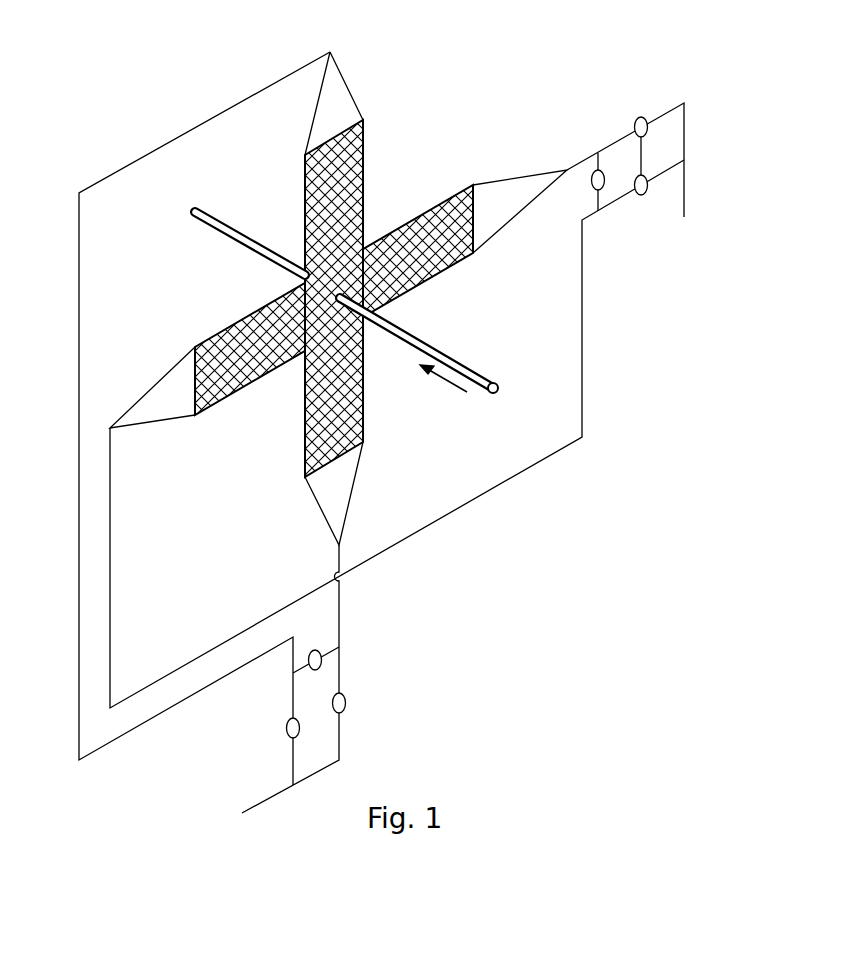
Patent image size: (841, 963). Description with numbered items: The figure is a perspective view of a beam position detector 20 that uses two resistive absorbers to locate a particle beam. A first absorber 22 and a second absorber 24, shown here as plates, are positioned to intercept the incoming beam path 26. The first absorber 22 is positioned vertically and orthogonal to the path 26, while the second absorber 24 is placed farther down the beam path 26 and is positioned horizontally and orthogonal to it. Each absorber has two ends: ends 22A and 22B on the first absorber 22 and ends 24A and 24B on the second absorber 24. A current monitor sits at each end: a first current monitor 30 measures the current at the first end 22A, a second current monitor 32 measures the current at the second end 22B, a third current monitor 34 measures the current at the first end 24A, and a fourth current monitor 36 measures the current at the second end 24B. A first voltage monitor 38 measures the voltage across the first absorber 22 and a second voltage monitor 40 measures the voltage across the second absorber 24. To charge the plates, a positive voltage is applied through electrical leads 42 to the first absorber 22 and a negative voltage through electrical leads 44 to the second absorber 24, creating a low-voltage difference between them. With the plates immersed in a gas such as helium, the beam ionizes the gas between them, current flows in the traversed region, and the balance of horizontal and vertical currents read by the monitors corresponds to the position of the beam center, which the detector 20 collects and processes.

The beam position detector 20 is at (712, 307).
The first absorber 22 is at (353, 187).
The first end of first absorber 22A is at (305, 458).
The second end of first absorber 22B is at (305, 180).
The second absorber 24 is at (418, 273).
The first end of second absorber 24A is at (472, 186).
The second end of second absorber 24B is at (203, 347).
The beam path 26 is at (482, 368).
The first current monitor 30 is at (347, 705).
The second current monitor 32 is at (287, 723).
The third current monitor 34 is at (641, 118).
The fourth current monitor 36 is at (637, 191).
The first voltage monitor 38 is at (320, 650).
The second voltage monitor 40 is at (591, 180).
The electrical leads to first absorber 42 is at (262, 798).
The electrical leads to second absorber 44 is at (684, 193).